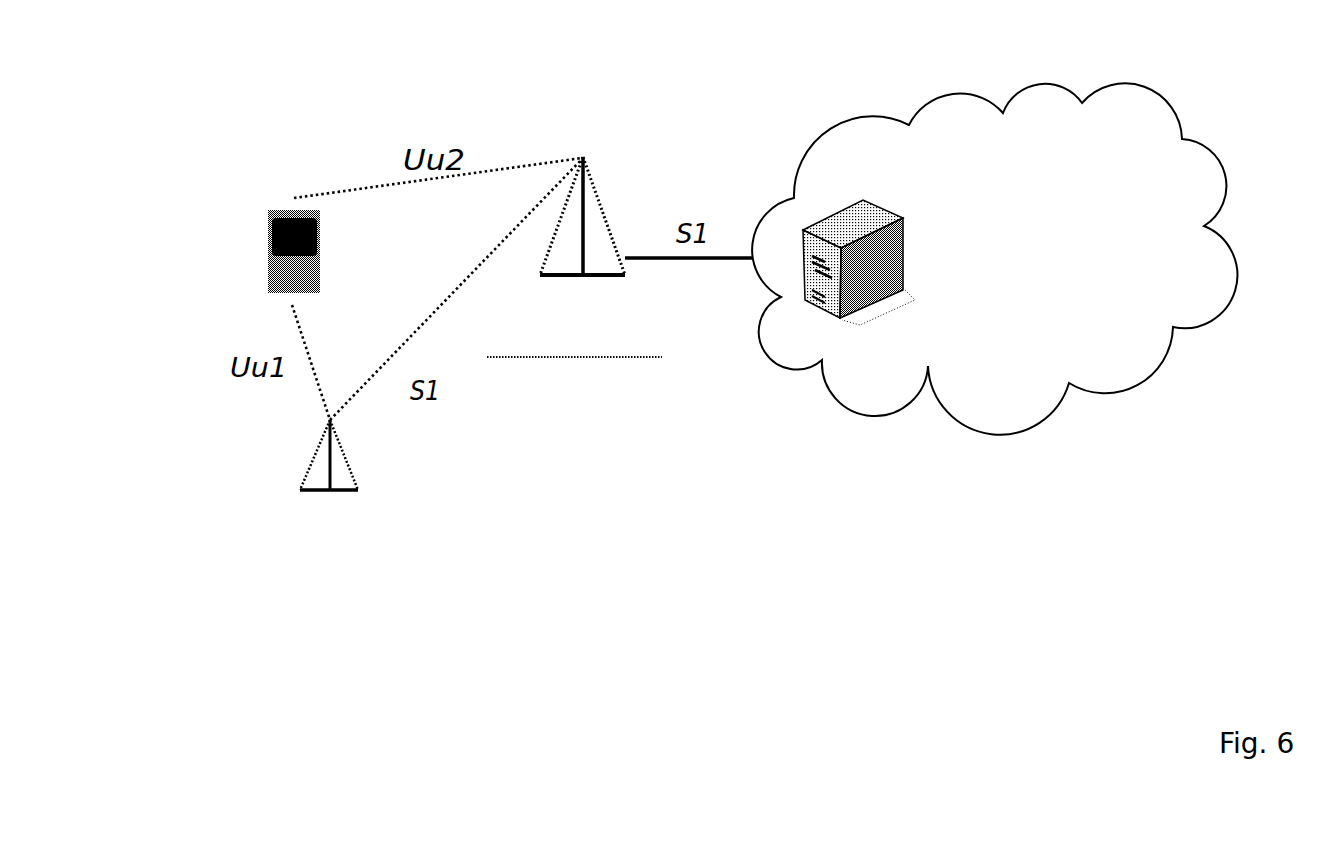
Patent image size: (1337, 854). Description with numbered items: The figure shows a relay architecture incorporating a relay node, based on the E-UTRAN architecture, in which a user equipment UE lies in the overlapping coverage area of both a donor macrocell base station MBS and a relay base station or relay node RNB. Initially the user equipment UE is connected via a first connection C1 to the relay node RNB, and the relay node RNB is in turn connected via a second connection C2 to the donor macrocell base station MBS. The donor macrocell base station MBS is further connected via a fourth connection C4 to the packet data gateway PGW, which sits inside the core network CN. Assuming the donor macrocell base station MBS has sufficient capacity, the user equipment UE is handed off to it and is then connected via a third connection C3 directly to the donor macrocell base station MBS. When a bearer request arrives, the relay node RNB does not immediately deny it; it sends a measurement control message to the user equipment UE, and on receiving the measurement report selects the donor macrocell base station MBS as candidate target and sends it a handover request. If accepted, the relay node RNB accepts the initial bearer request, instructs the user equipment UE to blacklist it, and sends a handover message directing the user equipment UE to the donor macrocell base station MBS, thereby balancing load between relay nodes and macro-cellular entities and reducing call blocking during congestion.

The user equipment UE is at (272, 222).
The donor macrocell base station MBS is at (583, 217).
The relay node RNB is at (337, 437).
The packet data gateway PGW is at (842, 205).
The core network CN is at (1136, 387).
The first connection C1 is at (315, 385).
The second connection C2 is at (377, 378).
The third connection C3 is at (516, 165).
The fourth connection C4 is at (709, 260).